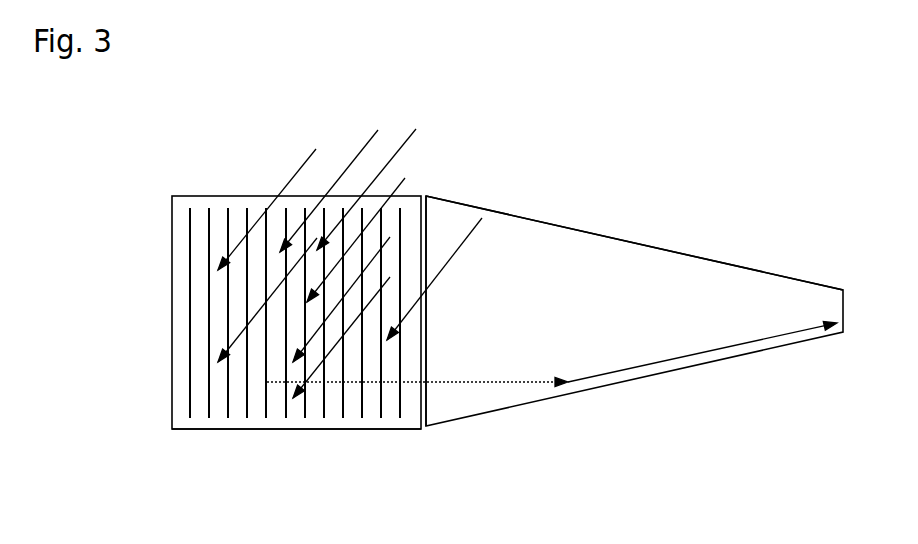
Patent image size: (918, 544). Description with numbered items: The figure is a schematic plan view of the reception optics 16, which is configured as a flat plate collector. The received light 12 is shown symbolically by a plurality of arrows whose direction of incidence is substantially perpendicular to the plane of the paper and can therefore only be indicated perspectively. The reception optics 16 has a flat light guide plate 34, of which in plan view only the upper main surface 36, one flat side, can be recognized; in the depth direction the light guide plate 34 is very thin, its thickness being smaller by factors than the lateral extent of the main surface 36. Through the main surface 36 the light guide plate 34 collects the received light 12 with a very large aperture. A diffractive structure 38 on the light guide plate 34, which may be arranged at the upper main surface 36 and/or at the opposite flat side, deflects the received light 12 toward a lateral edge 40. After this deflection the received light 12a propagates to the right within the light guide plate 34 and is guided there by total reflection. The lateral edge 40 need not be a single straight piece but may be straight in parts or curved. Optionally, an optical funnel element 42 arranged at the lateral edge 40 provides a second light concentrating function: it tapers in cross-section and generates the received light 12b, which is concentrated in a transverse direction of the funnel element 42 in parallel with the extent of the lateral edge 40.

The received light 12 is at (356, 152).
The received light after deflection 12a is at (462, 382).
The concentrated received light 12b is at (632, 368).
The reception optics 16 is at (603, 160).
The flat light guide plate 34 is at (277, 428).
The upper main surface 36 is at (218, 210).
The diffractive structure 38 is at (161, 315).
The lateral edge 40 is at (427, 343).
The optical funnel element 42 is at (680, 277).